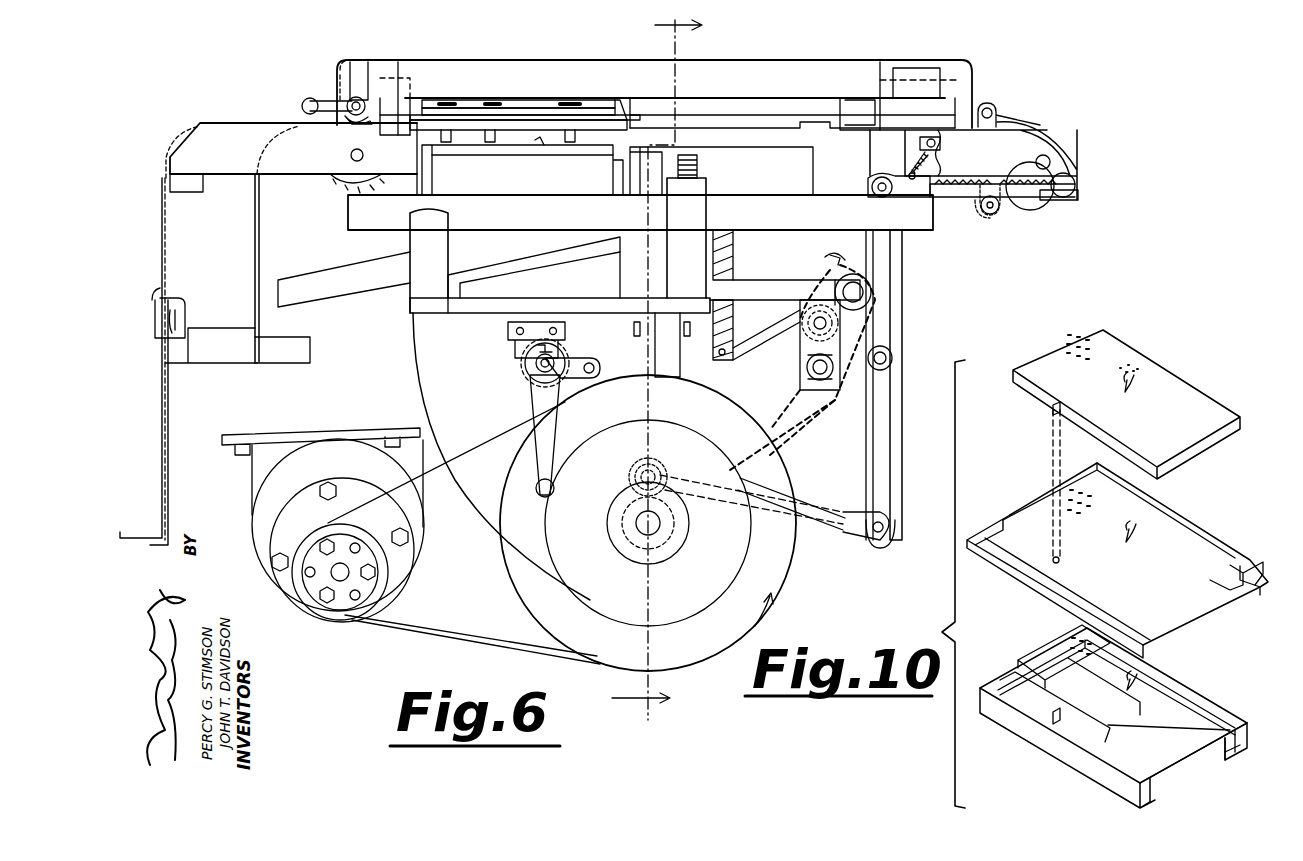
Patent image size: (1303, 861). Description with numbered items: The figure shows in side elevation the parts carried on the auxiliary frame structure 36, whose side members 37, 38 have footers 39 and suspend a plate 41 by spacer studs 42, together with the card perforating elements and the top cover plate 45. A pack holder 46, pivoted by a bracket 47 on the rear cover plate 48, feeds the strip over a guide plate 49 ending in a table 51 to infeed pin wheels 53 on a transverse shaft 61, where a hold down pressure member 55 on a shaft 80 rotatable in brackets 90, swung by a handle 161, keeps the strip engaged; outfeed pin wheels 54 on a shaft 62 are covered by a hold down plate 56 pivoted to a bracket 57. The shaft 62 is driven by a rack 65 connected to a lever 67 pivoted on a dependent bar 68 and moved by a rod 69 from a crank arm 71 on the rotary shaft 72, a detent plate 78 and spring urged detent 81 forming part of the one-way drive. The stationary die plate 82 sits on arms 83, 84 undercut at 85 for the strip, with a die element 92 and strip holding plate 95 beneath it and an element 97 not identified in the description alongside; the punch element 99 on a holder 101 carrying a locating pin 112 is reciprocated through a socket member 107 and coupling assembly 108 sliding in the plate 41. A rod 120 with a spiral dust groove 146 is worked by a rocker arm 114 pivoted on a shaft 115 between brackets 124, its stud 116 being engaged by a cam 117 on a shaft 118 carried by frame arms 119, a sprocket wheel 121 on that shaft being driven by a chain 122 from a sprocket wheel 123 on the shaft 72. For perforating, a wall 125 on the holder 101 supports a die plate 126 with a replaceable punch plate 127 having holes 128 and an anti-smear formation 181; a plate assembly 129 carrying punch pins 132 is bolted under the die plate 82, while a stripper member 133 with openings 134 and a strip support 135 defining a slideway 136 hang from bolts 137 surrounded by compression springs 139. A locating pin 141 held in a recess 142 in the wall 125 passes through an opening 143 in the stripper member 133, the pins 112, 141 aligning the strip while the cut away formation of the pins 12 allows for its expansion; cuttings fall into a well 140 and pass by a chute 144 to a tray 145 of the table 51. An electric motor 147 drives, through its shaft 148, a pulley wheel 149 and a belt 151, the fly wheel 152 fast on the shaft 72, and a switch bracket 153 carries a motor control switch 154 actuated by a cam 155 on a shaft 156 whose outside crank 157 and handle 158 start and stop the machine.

In FIG. 6, the pins 12 is at (639, 362).
In FIG. 6, the auxiliary frame structure 36 is at (220, 113).
In FIG. 6, the side member 37 is at (960, 200).
In FIG. 6, the side member 38 is at (925, 185).
In FIG. 6, the footers 39 is at (182, 192).
In FIG. 6, the plate 41 is at (410, 306).
In FIG. 6, the spacer studs 42 is at (707, 214).
In FIG. 6, the top lid or cover plate 45 is at (340, 75).
In FIG. 6, the pack holder 46 is at (165, 478).
In FIG. 6, the bracket 47 is at (186, 308).
In FIG. 6, the rear cover plate 48 is at (165, 150).
In FIG. 6, the guide plate 49 is at (255, 215).
In FIG. 6, the table 51 is at (216, 365).
In FIG. 6, the infeed pin wheels 53 is at (330, 182).
In FIG. 6, the pin wheels 54 is at (1080, 190).
In FIG. 6, the hold down pressure member 55 is at (352, 120).
In FIG. 6, the hold down plate 56 is at (1032, 128).
In FIG. 6, the bracket 57 is at (997, 110).
In FIG. 6, the transverse shaft 61 is at (350, 156).
In FIG. 6, the shaft 62 is at (1050, 165).
In FIG. 6, the rack 65 is at (978, 215).
In FIG. 6, the lever 67 is at (868, 470).
In FIG. 6, the dependent bar 68 is at (900, 250).
In FIG. 6, the rod 69 is at (832, 518).
In FIG. 6, the crank arm 71 is at (669, 504).
In FIG. 6, the rotary shaft 72 is at (660, 533).
In FIG. 6, the detent plate 78 is at (1006, 200).
In FIG. 6, the shaft 80 is at (358, 112).
In FIG. 6, the detent 81 is at (936, 145).
In FIG. 6, the die plate 82 is at (460, 63).
In FIG. 6, the arm 83 is at (398, 105).
In FIG. 6, the arm 84 is at (868, 105).
In FIG. 6, the undercut 85 is at (392, 118).
In FIG. 6, the brackets 90 is at (358, 75).
In FIG. 6, the die element 92 is at (756, 100).
In FIG. 6, the strip holding plate 95 is at (765, 122).
In FIG. 6, the plate 97 is at (733, 115).
In FIG. 6, the punch element 99 is at (776, 190).
In FIG. 6, the punch holder 101 is at (752, 228).
In FIG. 6, the socket member 107 is at (620, 260).
In FIG. 6, the coupling assembly 108 is at (668, 370).
In FIG. 6, the locating pin 112 is at (700, 148).
In FIG. 6, the rocker arm 114 is at (760, 338).
In FIG. 6, the shaft 115 is at (810, 326).
In FIG. 6, the stud 116 is at (895, 345).
In FIG. 6, the cam 117 is at (890, 268).
In FIG. 6, the shaft 118 is at (842, 292).
In FIG. 6, the stationary frame arms 119 is at (470, 298).
In FIG. 6, the rod 120 is at (733, 316).
In FIG. 6, the sprocket wheel 121 is at (880, 302).
In FIG. 6, the chain 122 is at (810, 415).
In FIG. 6, the sprocket wheel 123 is at (805, 378).
In FIG. 6, the brackets 124 is at (803, 350).
In FIG. 6, the wall 125 is at (568, 187).
In FIG. 10, the wall 125 is at (1097, 780).
In FIG. 6, the die plate 126 is at (580, 155).
In FIG. 10, the die plate 126 is at (1177, 762).
In FIG. 6, the punch plate 127 is at (492, 150).
In FIG. 10, the punch plate 127 is at (1188, 697).
In FIG. 10, the holes 128 is at (1130, 686).
In FIG. 6, the plate assembly 129 is at (497, 104).
In FIG. 10, the plate assembly 129 is at (1175, 462).
In FIG. 10, the punch pins 132 is at (1128, 386).
In FIG. 6, the stripper member 133 is at (510, 113).
In FIG. 10, the stripper member 133 is at (1188, 520).
In FIG. 10, the openings 134 is at (1130, 538).
In FIG. 6, the strip support 135 is at (548, 118).
In FIG. 10, the strip support 135 is at (1010, 555).
In FIG. 10, the slideway 136 is at (1262, 590).
In FIG. 6, the bolts 137 is at (582, 132).
In FIG. 6, the compression springs 139 is at (462, 104).
In FIG. 10, the well 140 is at (1212, 755).
In FIG. 6, the locating pin 141 is at (543, 150).
In FIG. 10, the recess 142 is at (1053, 720).
In FIG. 10, the opening 143 is at (1060, 562).
In FIG. 6, the chute 144 is at (347, 272).
In FIG. 6, the tray 145 is at (292, 338).
In FIG. 6, the spiral groove 146 is at (732, 266).
In FIG. 6, the electric motor 147 is at (395, 590).
In FIG. 6, the motor shaft 148 is at (342, 582).
In FIG. 6, the pulley wheel 149 is at (322, 610).
In FIG. 6, the belt 151 is at (442, 634).
In FIG. 6, the fly wheel 152 is at (522, 614).
In FIG. 6, the switch bracket 153 is at (520, 352).
In FIG. 6, the motor control switch 154 is at (556, 370).
In FIG. 6, the cam 155 is at (522, 378).
In FIG. 6, the shaft 156 is at (538, 367).
In FIG. 6, the crank 157 is at (555, 425).
In FIG. 6, the handle 158 is at (536, 490).
In FIG. 6, the handle 161 is at (302, 104).
In FIG. 10, the formation 181 is at (1060, 668).